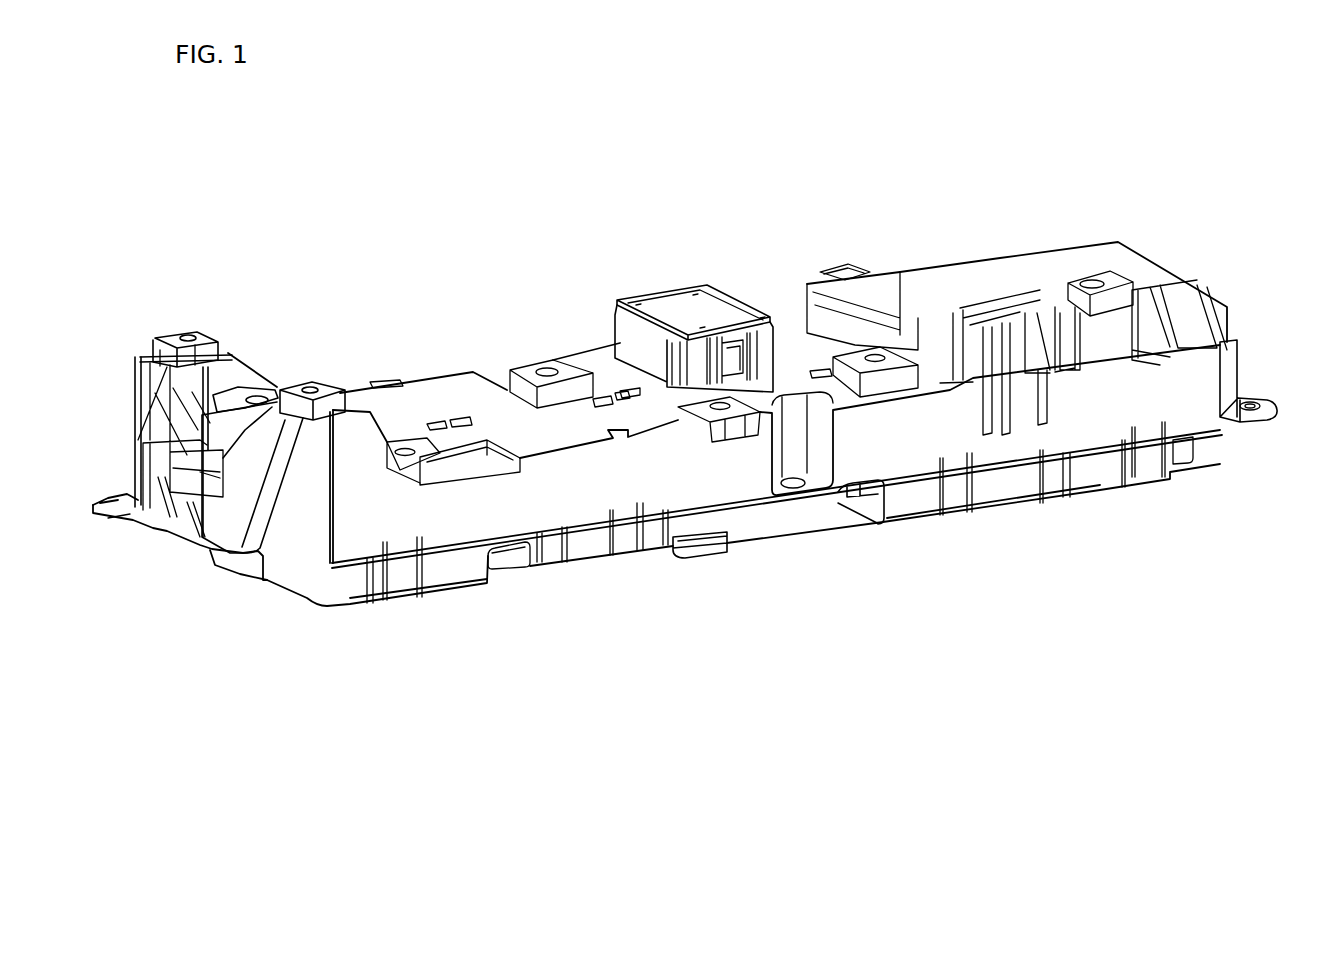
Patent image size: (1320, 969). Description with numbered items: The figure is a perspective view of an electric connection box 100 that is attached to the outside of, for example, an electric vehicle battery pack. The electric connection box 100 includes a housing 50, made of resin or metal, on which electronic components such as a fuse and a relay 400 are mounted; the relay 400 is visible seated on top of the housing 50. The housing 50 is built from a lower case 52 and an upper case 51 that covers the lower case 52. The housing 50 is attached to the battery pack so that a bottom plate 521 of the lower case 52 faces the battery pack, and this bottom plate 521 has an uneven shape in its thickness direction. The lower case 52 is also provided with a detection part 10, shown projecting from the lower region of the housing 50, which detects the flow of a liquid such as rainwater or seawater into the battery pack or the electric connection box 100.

The electric connection box 100 is at (1235, 138).
The relay 400 is at (673, 295).
The detection part 10 is at (704, 560).
The housing 50 is at (1305, 522).
The upper case 51 is at (1240, 367).
The lower case 52 is at (1167, 470).
The bottom plate 521 is at (912, 527).